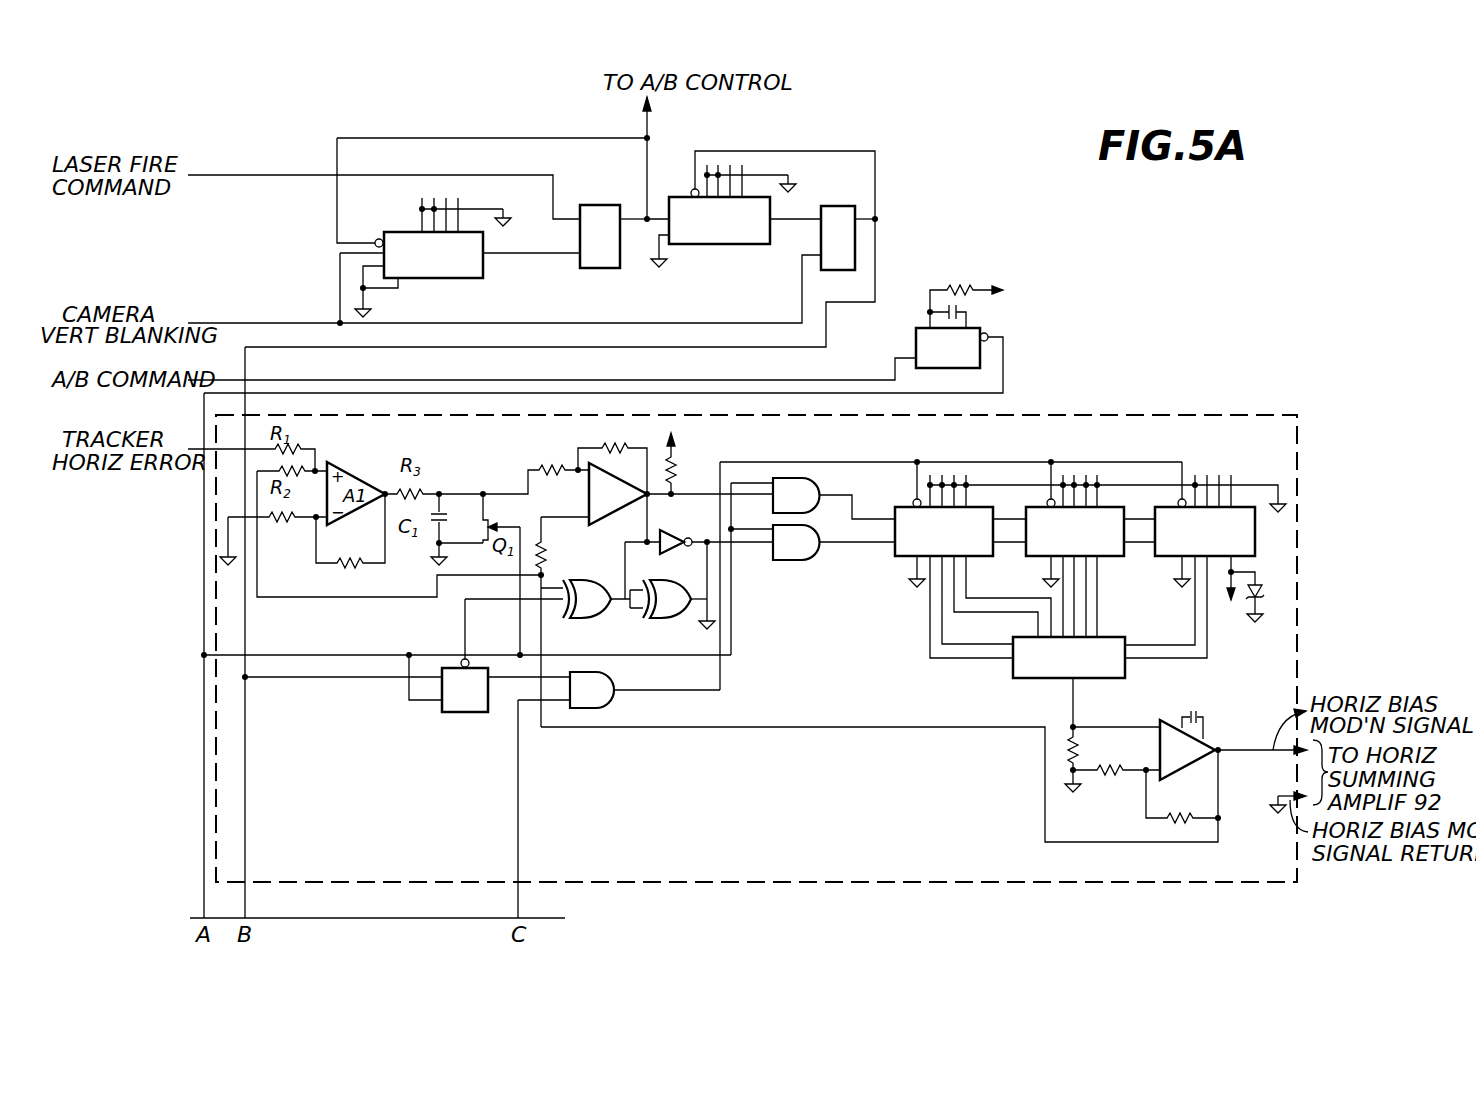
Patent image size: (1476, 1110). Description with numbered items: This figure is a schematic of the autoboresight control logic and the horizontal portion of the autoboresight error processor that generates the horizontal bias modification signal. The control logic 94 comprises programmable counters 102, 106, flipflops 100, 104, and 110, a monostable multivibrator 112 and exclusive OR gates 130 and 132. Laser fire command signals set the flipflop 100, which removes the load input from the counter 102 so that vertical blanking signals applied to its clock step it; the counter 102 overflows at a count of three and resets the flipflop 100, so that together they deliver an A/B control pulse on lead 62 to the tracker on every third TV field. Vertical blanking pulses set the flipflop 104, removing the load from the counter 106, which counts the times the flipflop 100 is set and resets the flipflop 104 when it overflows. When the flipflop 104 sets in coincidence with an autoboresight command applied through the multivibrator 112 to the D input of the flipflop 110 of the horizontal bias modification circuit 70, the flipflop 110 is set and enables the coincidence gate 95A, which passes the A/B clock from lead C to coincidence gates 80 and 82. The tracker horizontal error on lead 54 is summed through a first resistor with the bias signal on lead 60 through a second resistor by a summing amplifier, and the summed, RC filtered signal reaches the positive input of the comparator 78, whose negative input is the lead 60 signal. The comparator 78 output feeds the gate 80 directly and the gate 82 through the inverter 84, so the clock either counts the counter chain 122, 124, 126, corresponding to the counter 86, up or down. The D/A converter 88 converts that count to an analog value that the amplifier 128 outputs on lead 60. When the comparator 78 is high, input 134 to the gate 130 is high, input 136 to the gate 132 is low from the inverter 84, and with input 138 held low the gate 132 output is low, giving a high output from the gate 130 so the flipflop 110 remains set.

The lead 54 is at (195, 448).
The lead 60 is at (856, 727).
The lead 62 is at (650, 135).
The horizontal bias modification circuit 70 is at (1133, 884).
The comparator 78 is at (589, 501).
The coincidence gate 80 is at (818, 490).
The coincidence gate 82 is at (819, 550).
The inverter 84 is at (669, 553).
The counter 86 is at (1090, 545).
The D/A converter 88 is at (1106, 680).
The control logic 94 is at (492, 230).
The coincidence gate 95A is at (628, 697).
The flipflop 100 is at (598, 270).
The programmable counter 102 is at (467, 257).
The flipflop 104 is at (855, 243).
The programmable counter 106 is at (560, 249).
The flipflop 110 is at (448, 712).
The monostable multivibrator 112 is at (916, 345).
The counter 122 is at (973, 566).
The counter 124 is at (1058, 556).
The counter 126 is at (1194, 566).
The amplifier 128 is at (1177, 721).
The exclusive OR gate 130 is at (592, 617).
The exclusive OR gate 132 is at (680, 617).
The input 134 is at (625, 553).
The input 136 is at (707, 574).
The input 138 is at (711, 612).